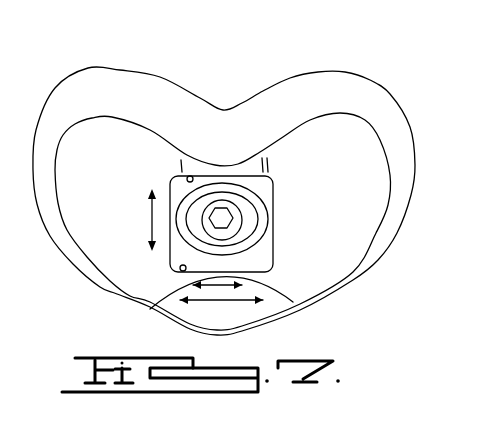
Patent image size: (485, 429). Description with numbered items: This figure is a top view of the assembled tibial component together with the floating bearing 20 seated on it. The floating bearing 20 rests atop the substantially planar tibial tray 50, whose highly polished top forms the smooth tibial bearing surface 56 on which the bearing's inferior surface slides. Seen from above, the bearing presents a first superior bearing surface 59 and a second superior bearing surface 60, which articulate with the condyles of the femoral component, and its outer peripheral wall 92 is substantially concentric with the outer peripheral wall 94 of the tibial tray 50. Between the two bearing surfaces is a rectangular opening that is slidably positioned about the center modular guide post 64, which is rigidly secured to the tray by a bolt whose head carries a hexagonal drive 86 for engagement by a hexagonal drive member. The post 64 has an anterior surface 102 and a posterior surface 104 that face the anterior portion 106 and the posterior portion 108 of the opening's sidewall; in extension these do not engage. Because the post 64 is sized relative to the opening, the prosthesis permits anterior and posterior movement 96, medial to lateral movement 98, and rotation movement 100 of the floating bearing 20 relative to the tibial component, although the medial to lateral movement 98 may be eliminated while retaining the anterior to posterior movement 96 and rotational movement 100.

The floating bearing 20 is at (86, 150).
The tibial tray 50 is at (405, 117).
The tibial bearing surface 56 is at (381, 135).
The first superior bearing surface 59 is at (103, 240).
The second superior bearing surface 60 is at (369, 221).
The center modular guide post 64 is at (246, 227).
The hexagonal drive 86 is at (224, 217).
The outer peripheral wall 92 is at (351, 274).
The outer peripheral wall 94 is at (335, 70).
The anterior and posterior movement 96 is at (148, 222).
The medial to lateral movement 98 is at (197, 317).
The rotation movement 100 is at (225, 288).
The anterior surface 102 is at (187, 248).
The posterior surface 104 is at (213, 187).
The anterior portion 106 is at (181, 270).
The posterior portion 108 is at (193, 179).